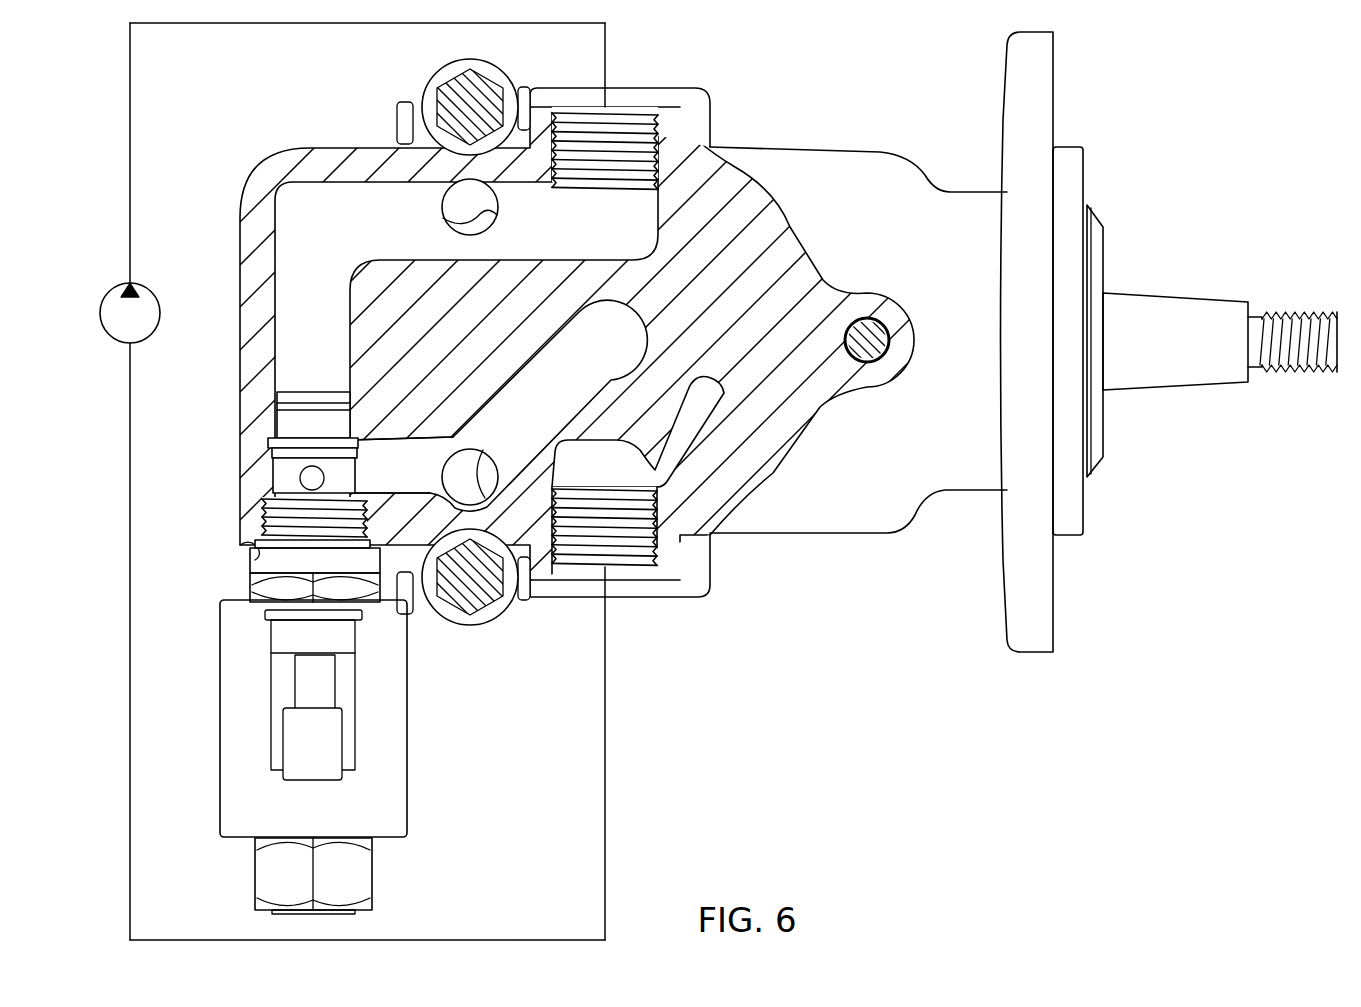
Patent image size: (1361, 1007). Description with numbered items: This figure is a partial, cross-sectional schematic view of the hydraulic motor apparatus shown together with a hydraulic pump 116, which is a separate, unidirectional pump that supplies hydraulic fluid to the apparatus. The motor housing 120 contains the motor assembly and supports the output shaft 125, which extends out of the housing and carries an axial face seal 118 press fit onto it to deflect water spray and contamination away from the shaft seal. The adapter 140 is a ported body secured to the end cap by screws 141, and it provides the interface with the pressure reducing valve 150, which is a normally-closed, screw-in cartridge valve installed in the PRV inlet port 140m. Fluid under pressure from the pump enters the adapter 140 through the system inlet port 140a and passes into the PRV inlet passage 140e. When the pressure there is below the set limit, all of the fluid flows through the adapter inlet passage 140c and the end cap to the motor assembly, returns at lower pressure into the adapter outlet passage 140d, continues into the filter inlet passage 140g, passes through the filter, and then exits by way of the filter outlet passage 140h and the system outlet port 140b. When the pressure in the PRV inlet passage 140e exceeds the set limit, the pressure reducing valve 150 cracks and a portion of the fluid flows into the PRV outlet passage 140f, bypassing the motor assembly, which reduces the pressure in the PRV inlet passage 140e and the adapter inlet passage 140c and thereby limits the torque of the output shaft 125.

The hydraulic pump 116 is at (103, 303).
The axial face seal 118 is at (1106, 252).
The motor housing 120 is at (918, 253).
The output shaft 125 is at (1193, 352).
The adapter 140 is at (327, 145).
The system inlet port 140a is at (655, 112).
The system outlet port 140b is at (650, 584).
The adapter inlet passage 140c is at (498, 214).
The adapter outlet passage 140d is at (484, 460).
The PRV inlet passage 140e is at (355, 241).
The PRV outlet passage 140f is at (373, 477).
The filter inlet passage 140g is at (635, 350).
The filter outlet passage 140h is at (592, 472).
The PRV inlet port 140m is at (262, 550).
The screws 141 is at (452, 82).
The pressure reducing valve 150 is at (290, 478).